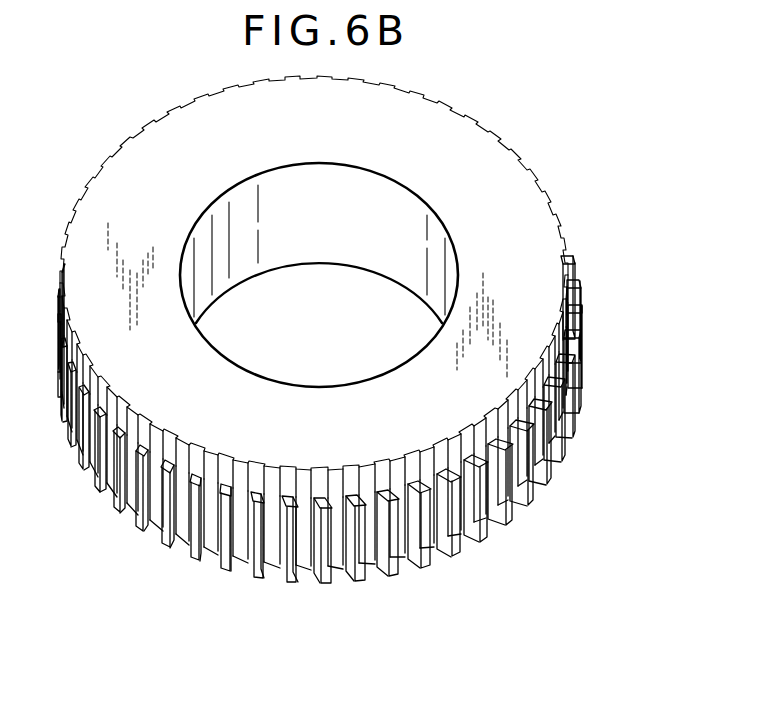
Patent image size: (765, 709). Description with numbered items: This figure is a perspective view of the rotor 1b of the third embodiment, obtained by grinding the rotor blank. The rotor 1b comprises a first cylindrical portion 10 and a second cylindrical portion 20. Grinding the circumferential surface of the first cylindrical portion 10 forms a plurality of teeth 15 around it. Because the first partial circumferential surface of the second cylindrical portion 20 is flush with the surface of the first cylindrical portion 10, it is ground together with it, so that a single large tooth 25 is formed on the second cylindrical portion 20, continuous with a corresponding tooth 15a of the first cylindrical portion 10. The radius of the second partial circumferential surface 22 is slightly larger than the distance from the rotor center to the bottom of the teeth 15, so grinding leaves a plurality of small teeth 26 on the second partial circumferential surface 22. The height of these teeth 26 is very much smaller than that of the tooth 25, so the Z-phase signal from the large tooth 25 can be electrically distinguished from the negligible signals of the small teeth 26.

The rotor 1b is at (367, 370).
The first cylindrical portion 10 is at (555, 477).
The teeth 15 is at (475, 542).
The tooth 15a is at (195, 563).
The second cylindrical portion 20 is at (532, 238).
The second partial circumferential surface 22 is at (533, 395).
The tooth 25 is at (193, 450).
The teeth 26 is at (385, 477).